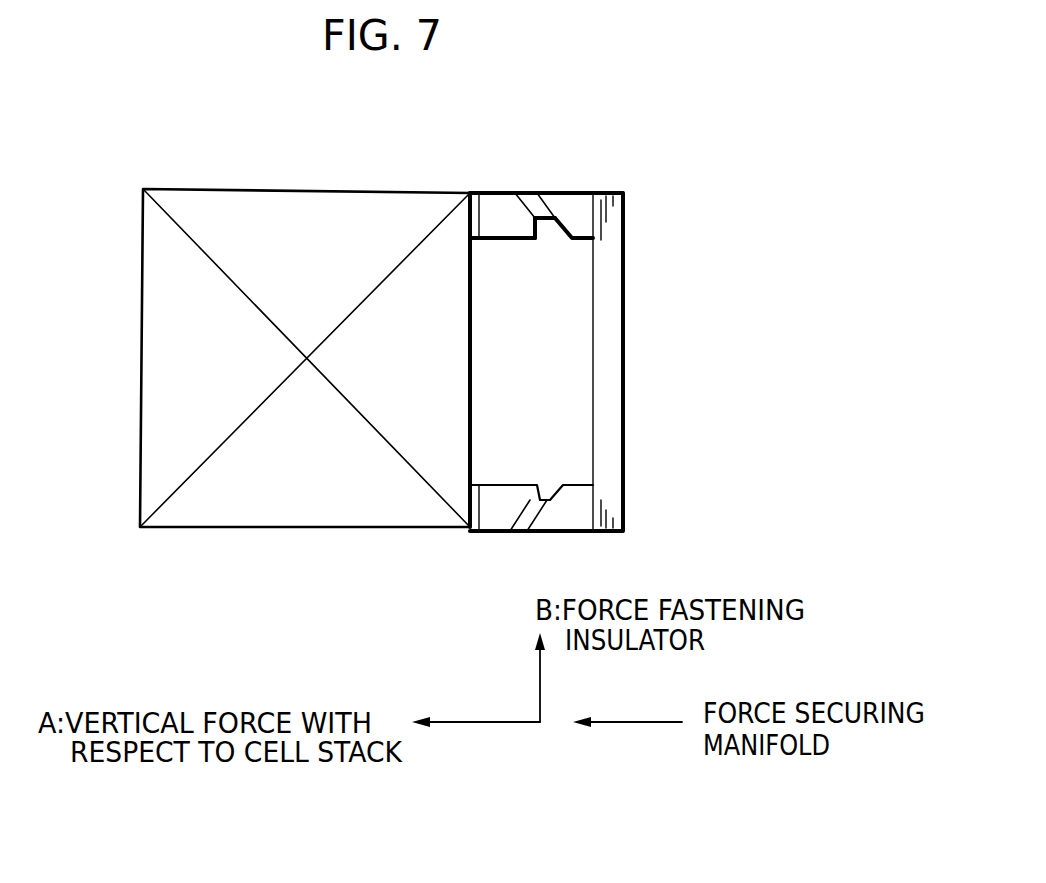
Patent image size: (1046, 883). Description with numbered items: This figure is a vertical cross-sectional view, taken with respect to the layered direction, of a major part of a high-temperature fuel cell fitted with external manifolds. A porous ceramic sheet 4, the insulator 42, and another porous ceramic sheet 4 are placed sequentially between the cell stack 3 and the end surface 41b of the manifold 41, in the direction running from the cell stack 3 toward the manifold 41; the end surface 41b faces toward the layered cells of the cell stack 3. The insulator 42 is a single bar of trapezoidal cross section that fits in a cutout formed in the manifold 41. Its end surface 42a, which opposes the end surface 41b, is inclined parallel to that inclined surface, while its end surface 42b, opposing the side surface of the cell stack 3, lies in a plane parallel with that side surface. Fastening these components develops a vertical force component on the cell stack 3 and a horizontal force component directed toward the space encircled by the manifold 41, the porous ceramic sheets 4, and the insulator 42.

The cell stack 3 is at (486, 170).
The porous ceramic sheet 4 is at (477, 192).
The manifold 41 is at (630, 291).
The end surface 41b is at (560, 193).
The insulator 42 is at (500, 213).
The end surface 42a is at (517, 240).
The end surface 42b is at (481, 222).